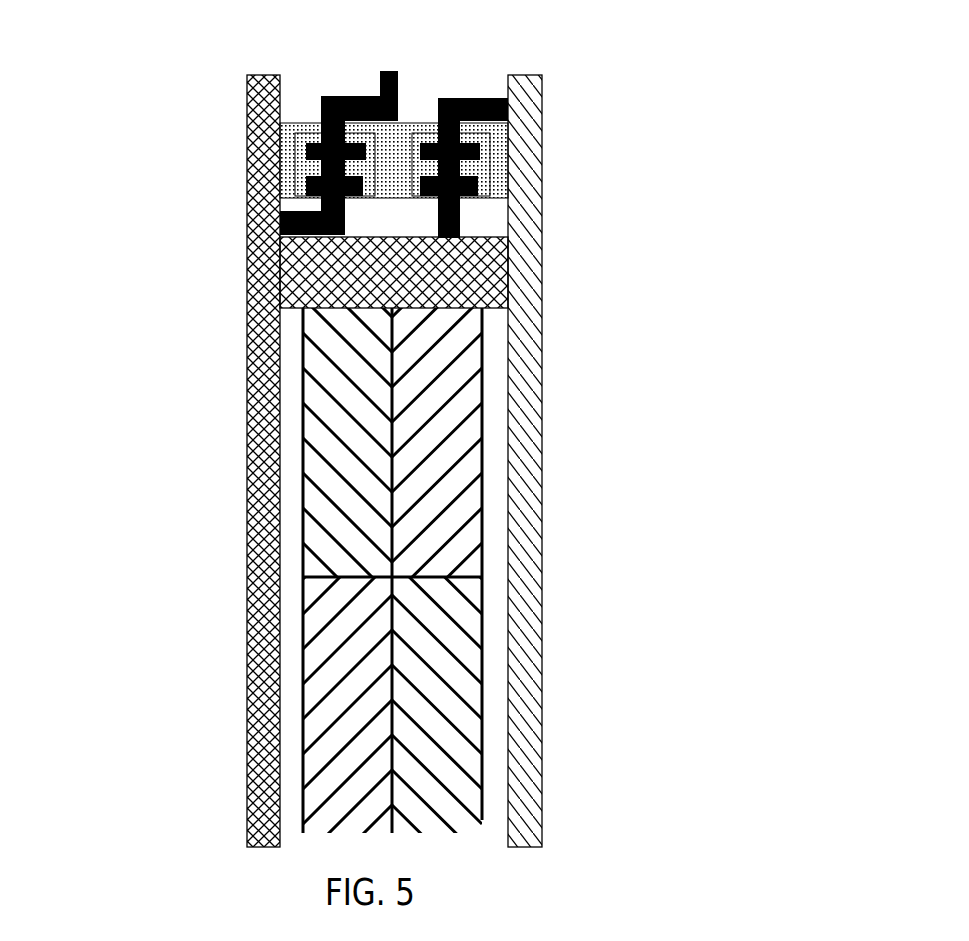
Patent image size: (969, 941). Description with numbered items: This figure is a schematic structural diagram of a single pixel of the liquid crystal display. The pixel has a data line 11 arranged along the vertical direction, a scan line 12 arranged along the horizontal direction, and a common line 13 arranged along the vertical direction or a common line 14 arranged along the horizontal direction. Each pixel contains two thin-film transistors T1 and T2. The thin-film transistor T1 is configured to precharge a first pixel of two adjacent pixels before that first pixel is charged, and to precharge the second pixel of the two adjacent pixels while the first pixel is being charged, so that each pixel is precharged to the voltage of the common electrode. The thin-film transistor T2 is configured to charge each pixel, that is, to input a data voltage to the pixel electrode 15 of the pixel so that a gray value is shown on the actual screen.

The data line 11 is at (541, 138).
The scan line 12 is at (510, 182).
The common line 13 is at (258, 126).
The common line 14 is at (315, 270).
The pixel electrode 15 is at (365, 538).
The thin-film transistor T1 is at (365, 91).
The thin-film transistor T2 is at (466, 100).